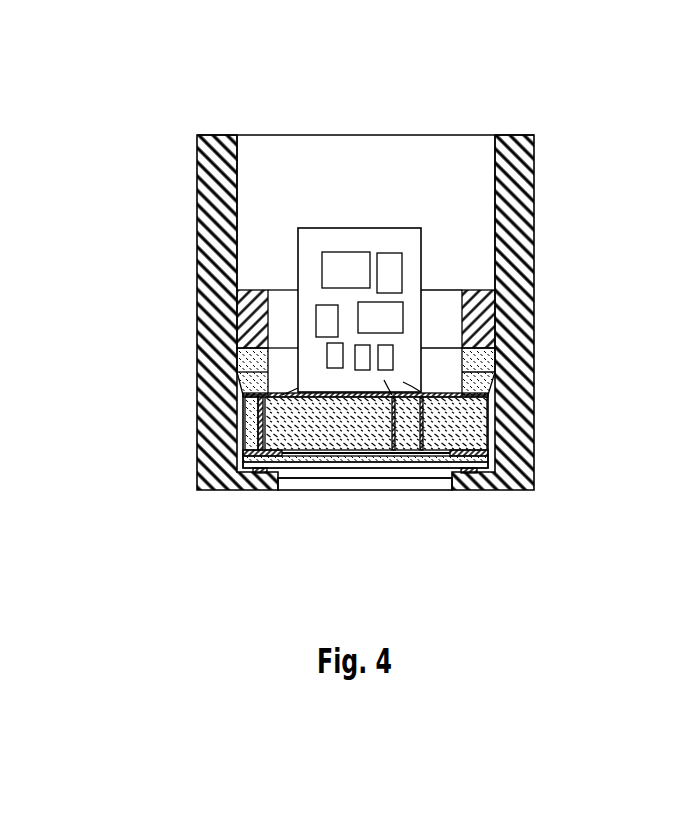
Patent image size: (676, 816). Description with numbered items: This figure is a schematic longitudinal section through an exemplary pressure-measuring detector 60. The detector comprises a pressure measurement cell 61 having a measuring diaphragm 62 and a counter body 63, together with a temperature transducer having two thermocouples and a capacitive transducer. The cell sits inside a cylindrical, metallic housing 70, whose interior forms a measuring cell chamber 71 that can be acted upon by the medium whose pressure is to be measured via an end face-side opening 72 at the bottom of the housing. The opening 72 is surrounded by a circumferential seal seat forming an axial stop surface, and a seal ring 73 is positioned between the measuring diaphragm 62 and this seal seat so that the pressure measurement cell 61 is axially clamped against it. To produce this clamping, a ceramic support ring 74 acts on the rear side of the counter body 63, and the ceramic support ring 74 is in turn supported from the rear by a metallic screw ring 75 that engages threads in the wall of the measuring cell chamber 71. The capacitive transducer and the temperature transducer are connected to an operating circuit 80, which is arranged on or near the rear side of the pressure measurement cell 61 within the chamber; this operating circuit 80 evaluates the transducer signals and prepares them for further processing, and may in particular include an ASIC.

The pressure-measuring detector 60 is at (178, 129).
The housing 70 is at (307, 312).
The measuring cell chamber 71 is at (238, 230).
The operating circuit 80 is at (298, 282).
The metallic screw ring 75 is at (255, 314).
The ceramic support ring 74 is at (243, 380).
The pressure measurement cell 61 is at (243, 437).
The counter body 63 is at (468, 432).
The measuring diaphragm 62 is at (333, 458).
The seal ring 73 is at (259, 476).
The opening 72 is at (445, 480).